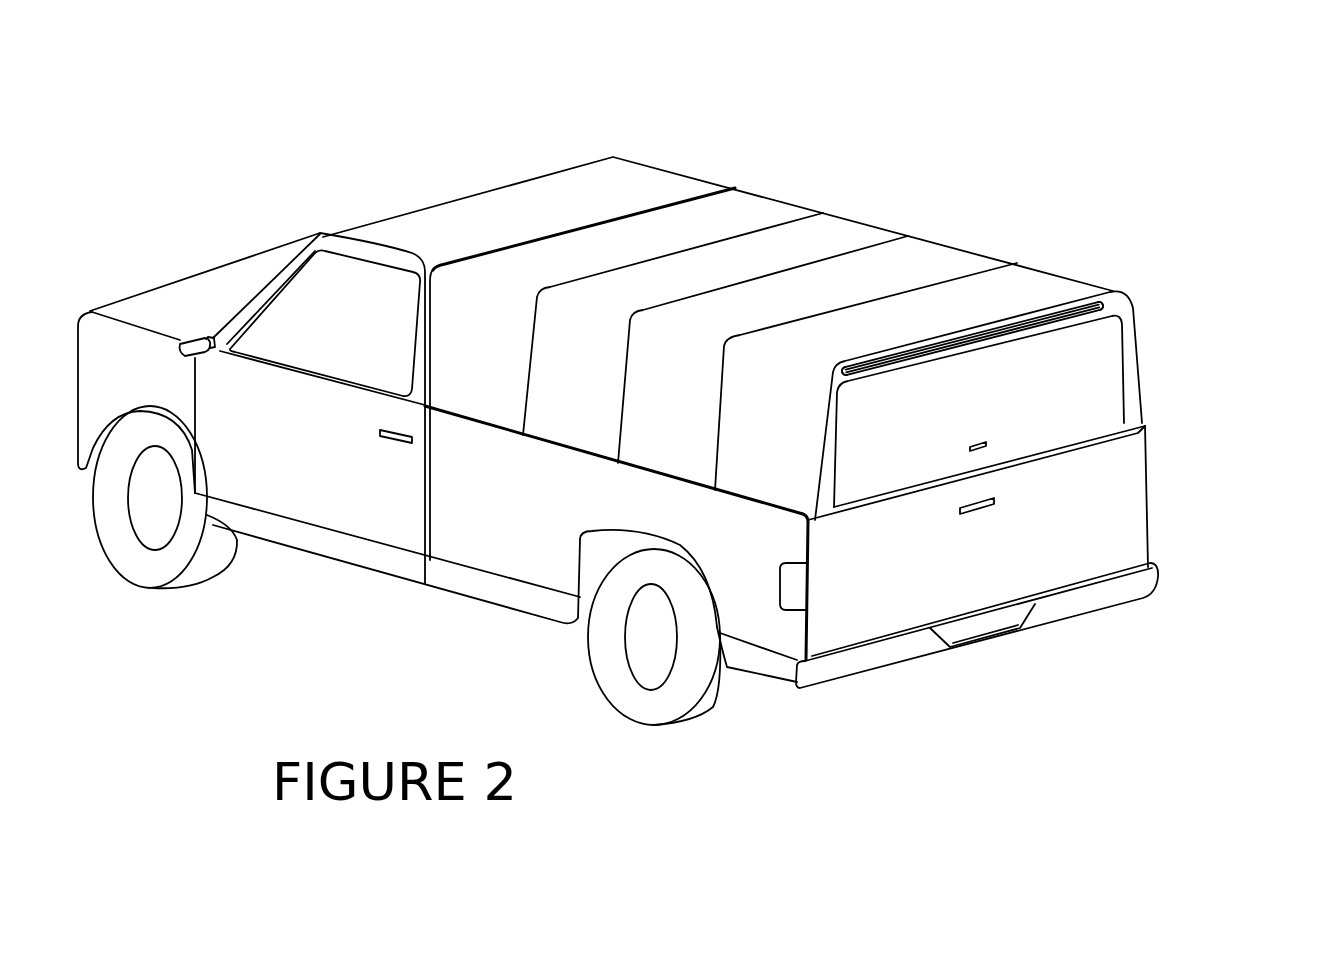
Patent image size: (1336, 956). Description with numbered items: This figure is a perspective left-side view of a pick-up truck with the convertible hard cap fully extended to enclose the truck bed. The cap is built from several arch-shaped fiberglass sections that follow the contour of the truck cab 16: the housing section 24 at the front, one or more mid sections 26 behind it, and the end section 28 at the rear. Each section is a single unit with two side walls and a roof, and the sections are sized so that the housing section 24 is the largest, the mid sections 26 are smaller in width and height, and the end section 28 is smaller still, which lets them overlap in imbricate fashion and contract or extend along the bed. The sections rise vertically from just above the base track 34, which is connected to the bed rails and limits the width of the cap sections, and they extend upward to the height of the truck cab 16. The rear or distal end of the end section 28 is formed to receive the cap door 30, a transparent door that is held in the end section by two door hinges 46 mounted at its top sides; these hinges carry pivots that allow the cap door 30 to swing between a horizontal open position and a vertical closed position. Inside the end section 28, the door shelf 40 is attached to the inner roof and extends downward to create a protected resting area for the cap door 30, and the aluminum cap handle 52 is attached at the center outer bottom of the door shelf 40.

The truck cab 16 is at (620, 187).
The housing section 24 is at (693, 223).
The mid sections 26 is at (827, 236).
The end section 28 is at (1053, 290).
The door shelf 40 is at (1097, 307).
The cap door 30 is at (1080, 390).
The cap handle 52 is at (987, 450).
The base track 34 is at (570, 450).
The door hinges 46 is at (1062, 325).